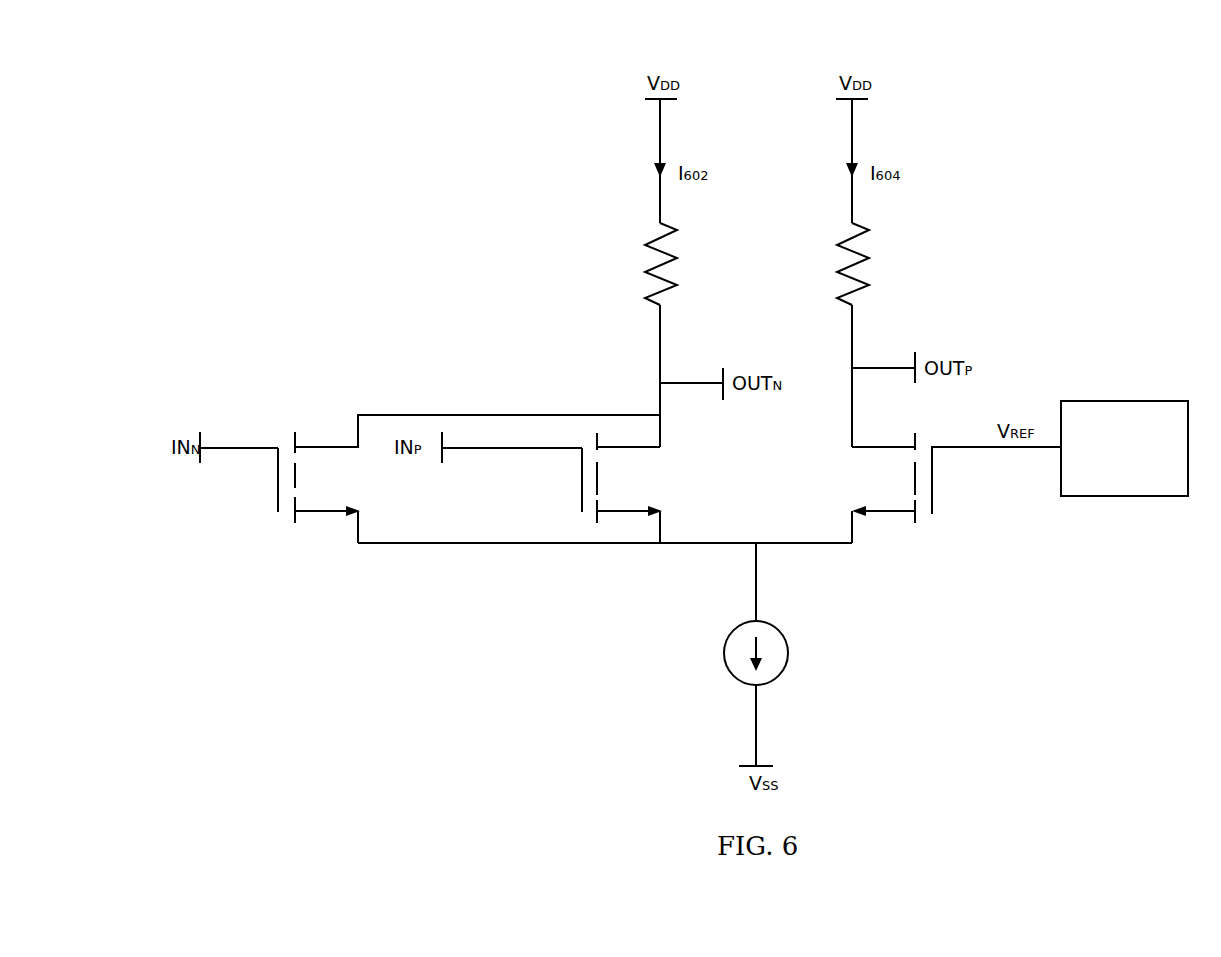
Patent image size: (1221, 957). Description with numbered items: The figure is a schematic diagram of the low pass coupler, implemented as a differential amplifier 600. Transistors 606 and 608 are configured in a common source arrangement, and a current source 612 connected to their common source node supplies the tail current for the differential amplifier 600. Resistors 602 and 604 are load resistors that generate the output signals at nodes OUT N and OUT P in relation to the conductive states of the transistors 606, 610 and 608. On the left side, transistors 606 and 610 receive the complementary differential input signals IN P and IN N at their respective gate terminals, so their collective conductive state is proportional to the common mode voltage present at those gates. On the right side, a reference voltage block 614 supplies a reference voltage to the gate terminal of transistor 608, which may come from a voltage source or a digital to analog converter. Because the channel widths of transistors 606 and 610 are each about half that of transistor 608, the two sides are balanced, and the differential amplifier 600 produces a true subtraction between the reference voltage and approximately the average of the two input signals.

The differential amplifier 600 is at (257, 711).
The resistor 602 is at (657, 265).
The resistor 604 is at (860, 253).
The transistor 606 is at (636, 506).
The transistor 608 is at (882, 513).
The transistor 610 is at (313, 510).
The current source 612 is at (778, 630).
The reference voltage block 614 is at (1093, 401).